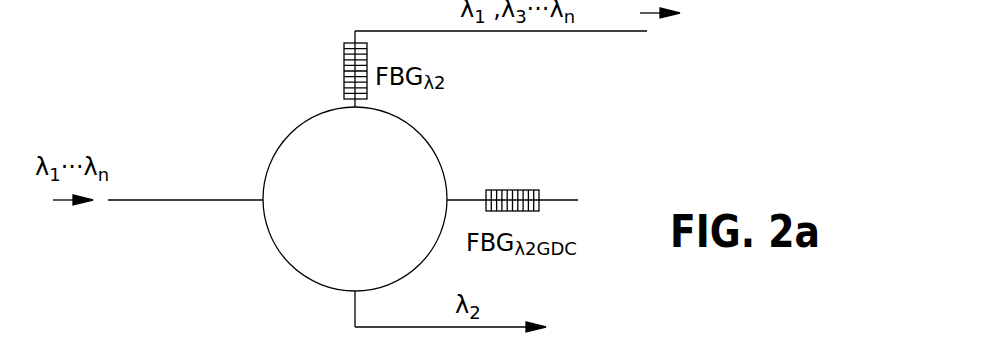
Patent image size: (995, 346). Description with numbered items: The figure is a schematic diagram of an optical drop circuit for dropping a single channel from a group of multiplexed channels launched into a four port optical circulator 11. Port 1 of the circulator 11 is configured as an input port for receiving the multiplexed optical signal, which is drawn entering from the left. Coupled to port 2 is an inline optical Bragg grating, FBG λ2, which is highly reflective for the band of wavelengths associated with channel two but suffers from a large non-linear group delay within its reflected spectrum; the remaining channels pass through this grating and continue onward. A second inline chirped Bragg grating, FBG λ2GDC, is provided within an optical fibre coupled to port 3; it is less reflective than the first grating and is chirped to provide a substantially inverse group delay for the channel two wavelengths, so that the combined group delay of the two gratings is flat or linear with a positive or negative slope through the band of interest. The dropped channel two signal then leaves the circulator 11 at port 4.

The optical circulator 11 is at (310, 232).
The port 1 is at (200, 201).
The port 2 is at (354, 85).
The port 3 is at (501, 201).
The port 4 is at (354, 297).